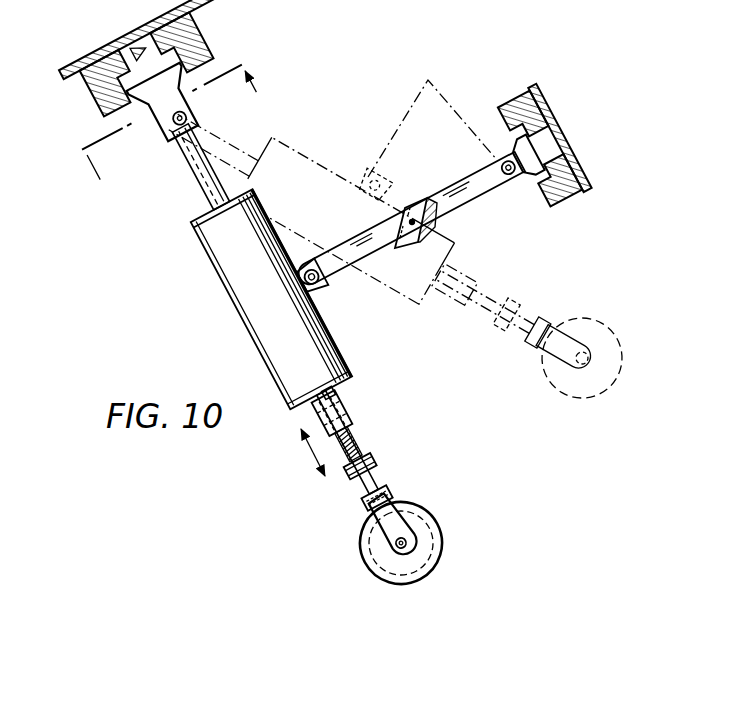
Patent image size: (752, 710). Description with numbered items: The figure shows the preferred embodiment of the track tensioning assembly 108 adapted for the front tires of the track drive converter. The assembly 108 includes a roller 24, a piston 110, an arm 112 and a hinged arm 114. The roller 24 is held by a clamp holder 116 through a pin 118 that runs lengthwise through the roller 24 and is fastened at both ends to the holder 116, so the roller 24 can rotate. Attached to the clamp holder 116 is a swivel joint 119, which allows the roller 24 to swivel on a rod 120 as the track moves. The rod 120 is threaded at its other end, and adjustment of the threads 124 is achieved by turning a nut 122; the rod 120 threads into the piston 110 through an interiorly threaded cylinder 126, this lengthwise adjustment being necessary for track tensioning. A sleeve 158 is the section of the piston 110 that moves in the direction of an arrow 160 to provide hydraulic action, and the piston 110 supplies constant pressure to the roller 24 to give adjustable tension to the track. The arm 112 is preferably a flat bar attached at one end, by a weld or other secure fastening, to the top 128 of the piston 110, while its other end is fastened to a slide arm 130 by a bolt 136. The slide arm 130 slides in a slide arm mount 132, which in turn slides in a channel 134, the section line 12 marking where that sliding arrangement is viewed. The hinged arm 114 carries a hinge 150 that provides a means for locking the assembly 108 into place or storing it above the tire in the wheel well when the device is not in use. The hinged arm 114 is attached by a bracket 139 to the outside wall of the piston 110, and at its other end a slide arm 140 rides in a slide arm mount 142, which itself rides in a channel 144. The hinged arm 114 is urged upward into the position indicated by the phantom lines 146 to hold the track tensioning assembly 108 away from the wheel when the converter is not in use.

The roller 24 is at (441, 541).
The track tensioning assembly 108 is at (238, 313).
The piston 110 is at (240, 282).
The arm 112 is at (200, 170).
The hinged arm 114 is at (487, 194).
The clamp holder 116 is at (395, 510).
The pin 118 is at (396, 546).
The swivel joint 119 is at (384, 497).
The rod 120 is at (365, 484).
The nut 122 is at (371, 470).
The threads 124 is at (357, 445).
The interiorly threaded cylinder 126 is at (346, 415).
The top of piston 128 is at (198, 214).
The slide arm 130 is at (178, 102).
The slide arm mount 132 is at (205, 36).
The channel 134 is at (130, 44).
The bolt 136 is at (167, 130).
The bracket 139 is at (318, 284).
The slide arm 140 is at (527, 172).
The slide arm mount 142 is at (559, 193).
The channel 144 is at (566, 136).
The lines indicating upward position 146 is at (432, 85).
The hinge 150 is at (427, 244).
The sleeve 158 is at (337, 392).
The arrow 160 is at (297, 452).
The section line 12- 12 is at (179, 133).